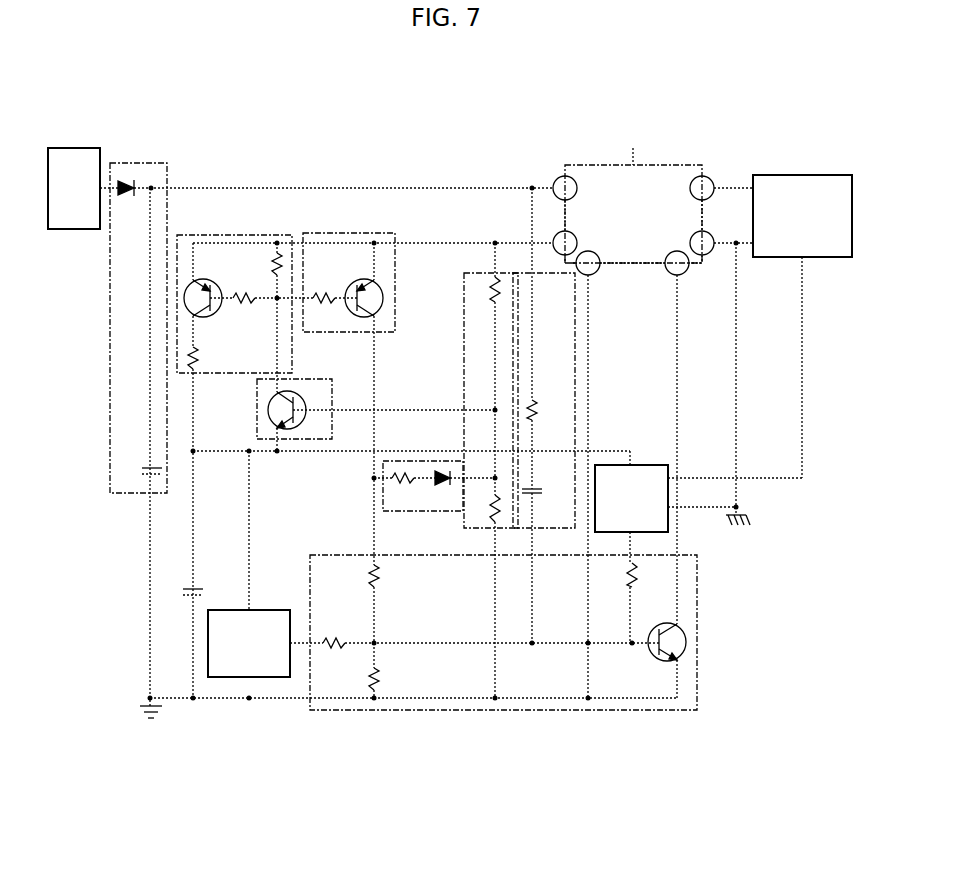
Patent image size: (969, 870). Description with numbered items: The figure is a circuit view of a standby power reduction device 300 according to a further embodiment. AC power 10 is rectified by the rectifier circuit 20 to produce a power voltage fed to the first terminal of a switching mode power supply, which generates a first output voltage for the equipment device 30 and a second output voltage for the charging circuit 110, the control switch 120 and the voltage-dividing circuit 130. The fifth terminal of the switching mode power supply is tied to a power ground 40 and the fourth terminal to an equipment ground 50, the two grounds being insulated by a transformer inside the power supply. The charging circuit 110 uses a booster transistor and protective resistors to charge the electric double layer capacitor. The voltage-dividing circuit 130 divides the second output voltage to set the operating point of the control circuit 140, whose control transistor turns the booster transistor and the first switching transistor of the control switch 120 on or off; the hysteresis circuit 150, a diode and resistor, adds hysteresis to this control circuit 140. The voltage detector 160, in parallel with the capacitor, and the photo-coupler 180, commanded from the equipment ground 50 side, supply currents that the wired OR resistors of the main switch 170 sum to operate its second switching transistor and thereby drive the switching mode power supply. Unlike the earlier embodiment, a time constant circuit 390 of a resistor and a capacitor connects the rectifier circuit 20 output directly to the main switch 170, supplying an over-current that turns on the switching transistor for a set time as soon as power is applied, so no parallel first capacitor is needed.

The standby power reduction device 300 is at (44, 88).
The AC power 10 is at (73, 148).
The rectifier circuit 20 is at (137, 163).
The equipment device 30 is at (803, 175).
The power ground 40 is at (138, 711).
The equipment ground 50 is at (752, 526).
The charging circuit 110 is at (231, 235).
The control switch 120 is at (351, 233).
The voltage-dividing circuit 130 is at (463, 300).
The control circuit 140 is at (314, 379).
The hysteresis circuit 150 is at (421, 511).
The voltage detector 160 is at (227, 610).
The main switch 170 is at (482, 710).
The photo-coupler 180 is at (645, 465).
The time constant circuit 390 is at (576, 300).